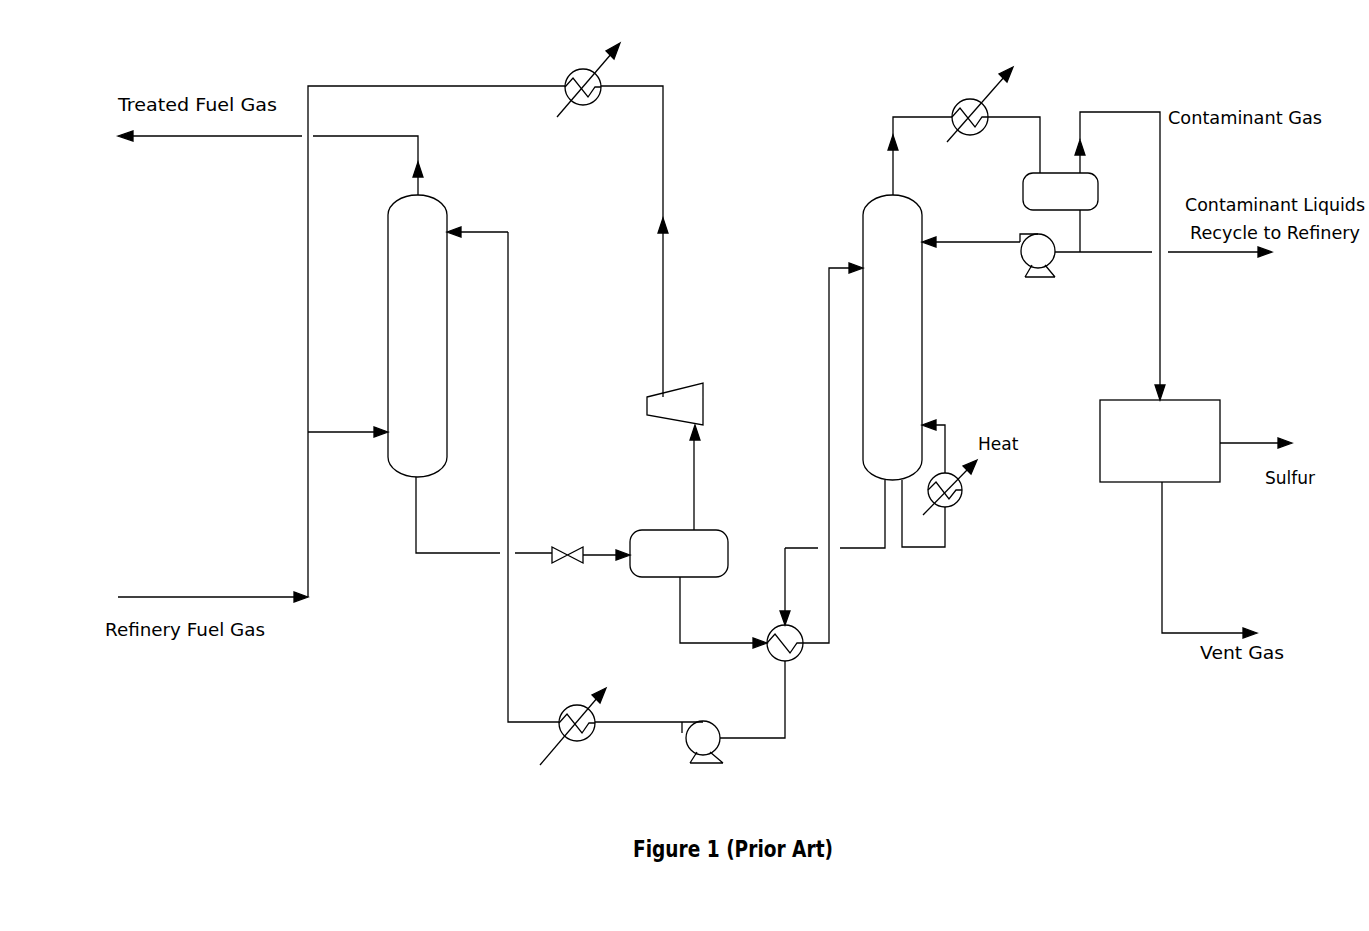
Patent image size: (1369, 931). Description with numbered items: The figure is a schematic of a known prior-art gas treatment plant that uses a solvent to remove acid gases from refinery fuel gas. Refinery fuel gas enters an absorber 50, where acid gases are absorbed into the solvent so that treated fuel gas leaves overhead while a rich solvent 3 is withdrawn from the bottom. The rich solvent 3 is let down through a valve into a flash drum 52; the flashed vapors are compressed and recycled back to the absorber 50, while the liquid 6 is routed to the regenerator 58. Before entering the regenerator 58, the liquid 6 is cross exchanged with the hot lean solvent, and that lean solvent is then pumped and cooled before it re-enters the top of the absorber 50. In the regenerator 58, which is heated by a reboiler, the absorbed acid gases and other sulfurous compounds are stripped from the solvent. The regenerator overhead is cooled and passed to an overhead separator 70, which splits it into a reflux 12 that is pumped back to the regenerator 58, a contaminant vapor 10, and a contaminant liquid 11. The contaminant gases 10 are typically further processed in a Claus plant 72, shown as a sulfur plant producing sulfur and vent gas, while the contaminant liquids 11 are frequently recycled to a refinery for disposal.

The absorber 50 is at (447, 310).
The rich solvent 3 is at (416, 500).
The flash drum 52 is at (668, 530).
The liquid 6 is at (680, 620).
The regenerator 58 is at (863, 213).
The overhead separator 70 is at (1023, 200).
The reflux 12 is at (962, 242).
The contaminant vapor 10 is at (1140, 112).
The contaminant liquid 11 is at (1228, 260).
The Claus plant 72 is at (1203, 400).